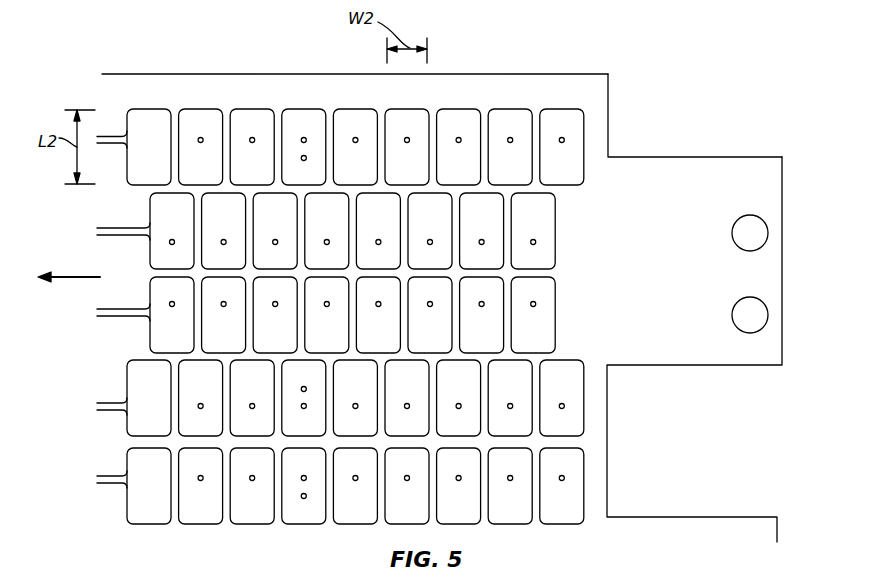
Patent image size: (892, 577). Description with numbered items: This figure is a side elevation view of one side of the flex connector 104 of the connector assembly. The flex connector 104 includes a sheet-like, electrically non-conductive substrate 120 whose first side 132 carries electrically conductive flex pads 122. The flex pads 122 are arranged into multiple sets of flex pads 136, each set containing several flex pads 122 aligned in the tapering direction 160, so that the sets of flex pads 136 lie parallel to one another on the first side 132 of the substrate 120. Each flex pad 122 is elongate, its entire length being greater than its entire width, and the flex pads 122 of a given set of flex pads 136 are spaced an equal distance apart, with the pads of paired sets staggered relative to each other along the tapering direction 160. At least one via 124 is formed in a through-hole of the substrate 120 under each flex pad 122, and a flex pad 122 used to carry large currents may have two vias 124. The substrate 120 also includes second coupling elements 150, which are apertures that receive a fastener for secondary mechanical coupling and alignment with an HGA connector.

The flex connector 104 is at (614, 85).
The substrate 120 is at (447, 88).
The flex pad 122 is at (193, 120).
The via 124 is at (201, 138).
The first side 132 is at (563, 88).
The set of flex pads 136 is at (562, 230).
The second coupling element 150 is at (735, 229).
The tapering direction 160 is at (72, 275).